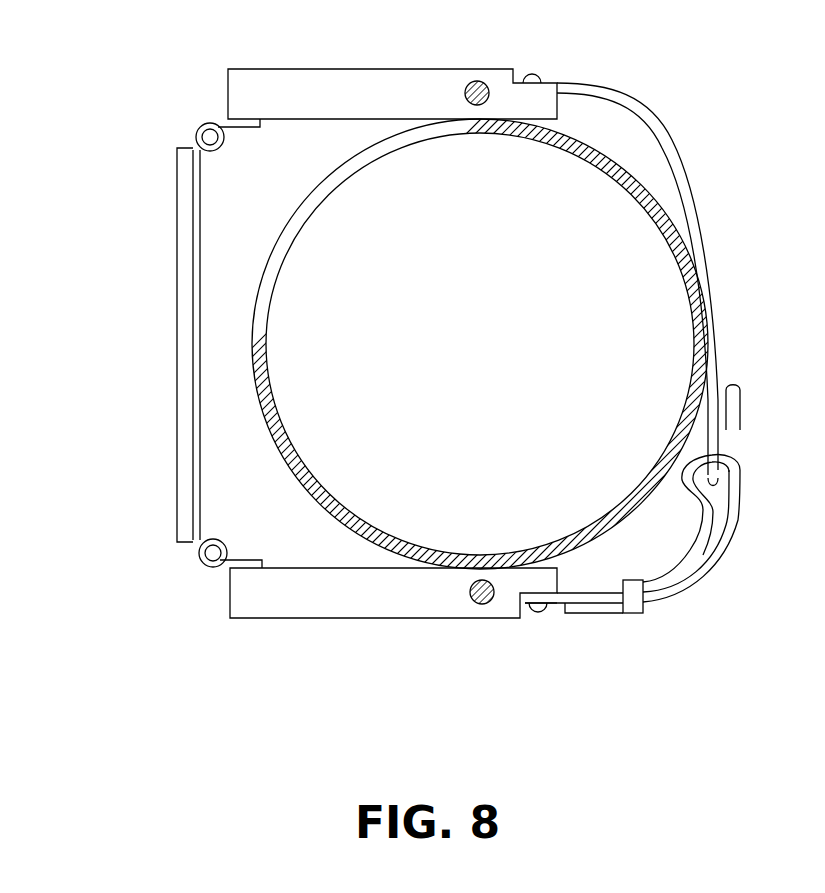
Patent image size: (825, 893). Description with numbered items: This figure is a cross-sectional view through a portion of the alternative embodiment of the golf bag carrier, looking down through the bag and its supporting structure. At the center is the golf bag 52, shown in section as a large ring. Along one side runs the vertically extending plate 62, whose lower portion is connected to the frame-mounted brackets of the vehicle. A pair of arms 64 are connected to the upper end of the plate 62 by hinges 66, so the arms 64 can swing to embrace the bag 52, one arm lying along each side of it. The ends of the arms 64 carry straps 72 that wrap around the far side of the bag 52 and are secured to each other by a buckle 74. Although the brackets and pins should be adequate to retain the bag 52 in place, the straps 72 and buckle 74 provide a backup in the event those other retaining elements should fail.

The golf bag 52 is at (262, 400).
The plate 62 is at (177, 272).
The arms 64 is at (430, 84).
The hinges 66 is at (203, 122).
The straps 72 is at (643, 110).
The buckle 74 is at (726, 428).